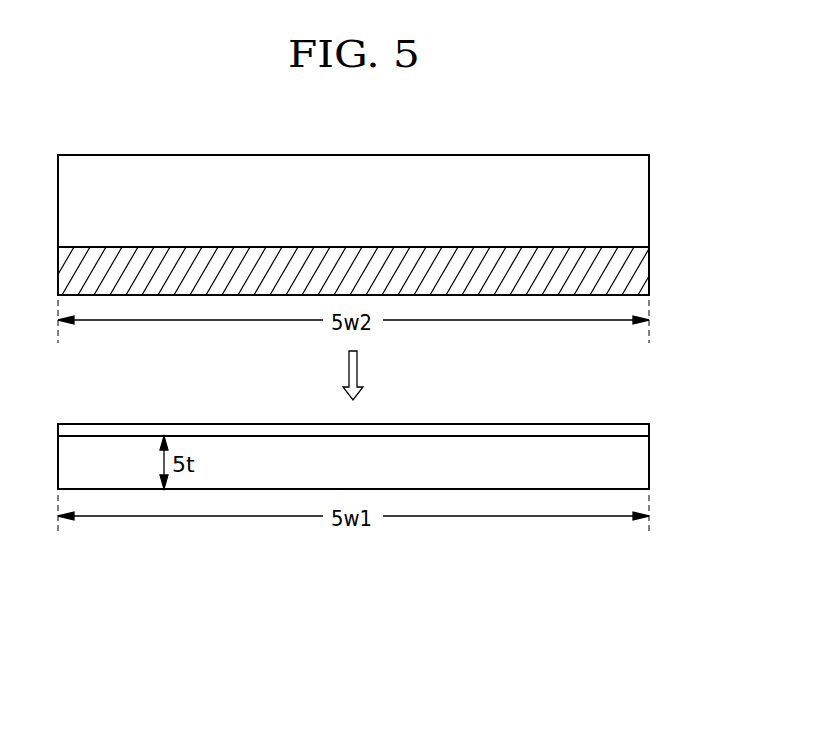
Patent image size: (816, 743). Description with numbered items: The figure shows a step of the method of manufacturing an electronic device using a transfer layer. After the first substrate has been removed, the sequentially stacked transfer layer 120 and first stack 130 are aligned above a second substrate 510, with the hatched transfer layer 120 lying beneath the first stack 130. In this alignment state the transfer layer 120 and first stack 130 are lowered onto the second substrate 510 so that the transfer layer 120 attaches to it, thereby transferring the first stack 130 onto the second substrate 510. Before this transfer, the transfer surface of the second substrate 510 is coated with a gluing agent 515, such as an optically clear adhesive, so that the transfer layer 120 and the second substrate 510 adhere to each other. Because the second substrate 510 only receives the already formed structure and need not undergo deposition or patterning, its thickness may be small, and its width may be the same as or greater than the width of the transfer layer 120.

The first stack 130 is at (645, 201).
The transfer layer 120 is at (645, 270).
The gluing agent 515 is at (645, 430).
The second substrate 510 is at (645, 463).